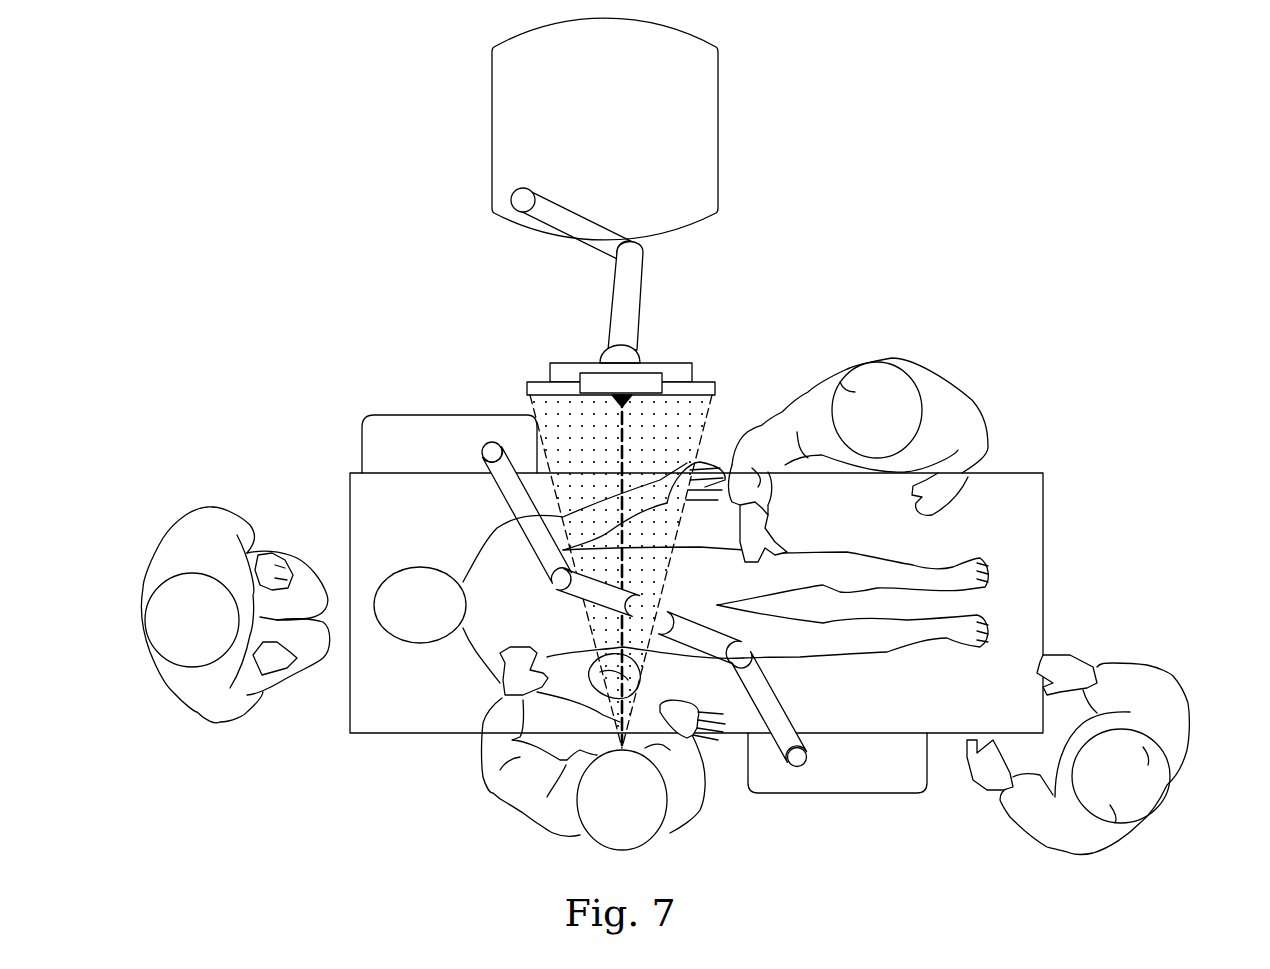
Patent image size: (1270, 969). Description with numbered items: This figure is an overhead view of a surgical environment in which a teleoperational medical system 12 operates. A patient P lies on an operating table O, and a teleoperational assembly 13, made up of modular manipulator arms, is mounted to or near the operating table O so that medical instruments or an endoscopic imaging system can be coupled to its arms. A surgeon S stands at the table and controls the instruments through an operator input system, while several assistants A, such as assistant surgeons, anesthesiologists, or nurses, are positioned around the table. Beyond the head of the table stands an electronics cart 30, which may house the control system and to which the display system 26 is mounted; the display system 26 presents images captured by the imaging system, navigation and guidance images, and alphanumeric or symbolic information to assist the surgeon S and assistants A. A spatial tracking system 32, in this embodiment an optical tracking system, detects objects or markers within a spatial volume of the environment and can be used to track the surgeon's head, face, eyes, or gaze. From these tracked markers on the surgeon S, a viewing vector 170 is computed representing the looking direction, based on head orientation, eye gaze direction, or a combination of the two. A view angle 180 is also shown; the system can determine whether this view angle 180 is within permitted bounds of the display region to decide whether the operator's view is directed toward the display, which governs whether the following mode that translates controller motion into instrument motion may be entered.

The teleoperational medical system 12 is at (362, 172).
The electronics cart 30 is at (721, 129).
The display system 26 is at (560, 362).
The spatial tracking system 32 is at (653, 362).
The teleoperational assembly 13 is at (505, 494).
The viewing vector 170 is at (583, 621).
The view angle 180 is at (667, 603).
The patient P is at (478, 658).
The operating table O is at (418, 735).
The surgeon S is at (558, 837).
The assistant A is at (162, 688).